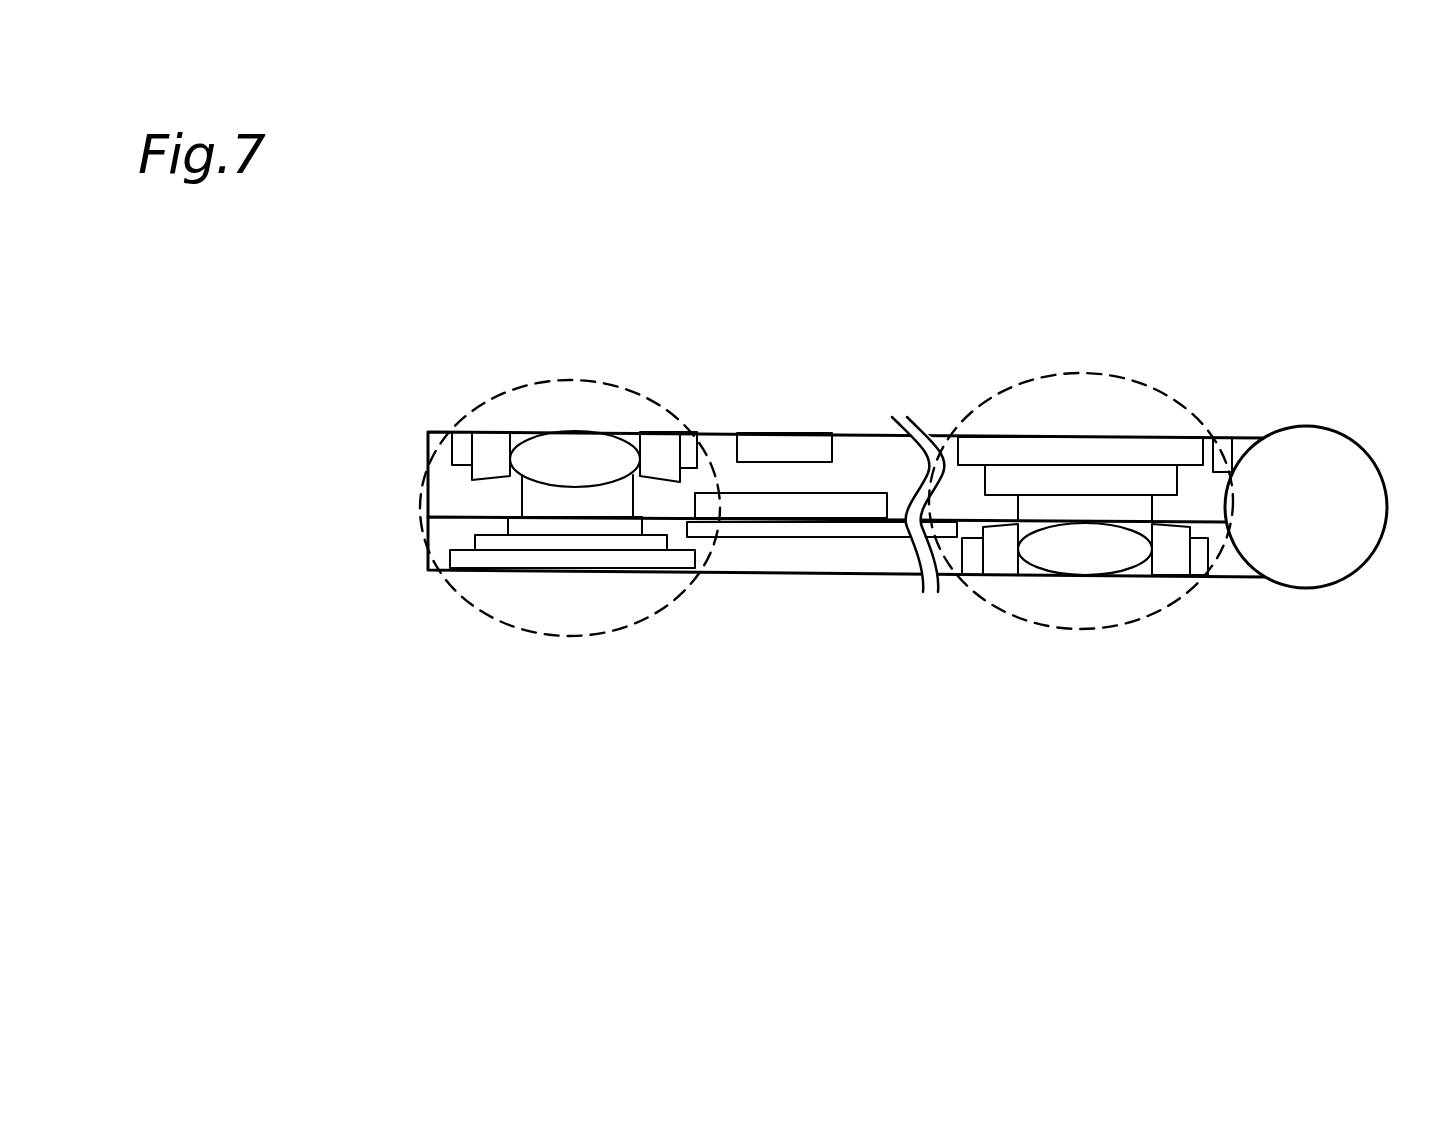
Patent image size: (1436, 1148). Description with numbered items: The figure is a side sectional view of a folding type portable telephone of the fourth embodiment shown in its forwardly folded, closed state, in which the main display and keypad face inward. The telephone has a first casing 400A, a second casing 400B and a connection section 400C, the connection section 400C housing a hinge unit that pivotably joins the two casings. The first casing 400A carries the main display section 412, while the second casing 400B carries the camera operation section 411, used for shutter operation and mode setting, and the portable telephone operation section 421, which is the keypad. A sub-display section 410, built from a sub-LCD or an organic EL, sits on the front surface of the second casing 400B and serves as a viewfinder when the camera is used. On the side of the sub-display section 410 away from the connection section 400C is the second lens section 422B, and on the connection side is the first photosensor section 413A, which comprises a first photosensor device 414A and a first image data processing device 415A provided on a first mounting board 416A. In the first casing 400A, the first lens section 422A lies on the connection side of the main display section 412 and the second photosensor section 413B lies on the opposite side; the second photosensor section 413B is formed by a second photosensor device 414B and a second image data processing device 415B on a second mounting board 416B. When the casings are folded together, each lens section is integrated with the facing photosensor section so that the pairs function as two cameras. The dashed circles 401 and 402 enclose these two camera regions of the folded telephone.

The first casing 400A is at (376, 546).
The second casing 400B is at (389, 441).
The connection section 400C is at (1313, 533).
The enlarged region 401 is at (1193, 587).
The enlarged region 402 is at (463, 412).
The sub-display section 410 is at (777, 443).
The camera operation section 411 is at (1235, 447).
The main display section 412 is at (765, 527).
The first photosensor section 413A is at (1020, 338).
The second photosensor section 413B is at (576, 693).
The first photosensor device 414A is at (1112, 398).
The second photosensor device 414B is at (612, 527).
The first image data processing device 415A is at (1027, 482).
The second image data processing device 415B is at (528, 543).
The first mounting board 416A is at (1055, 448).
The second mounting board 416B is at (572, 619).
The portable telephone operation section 421 is at (833, 505).
The first lens section 422A is at (1102, 583).
The second lens section 422B is at (588, 408).